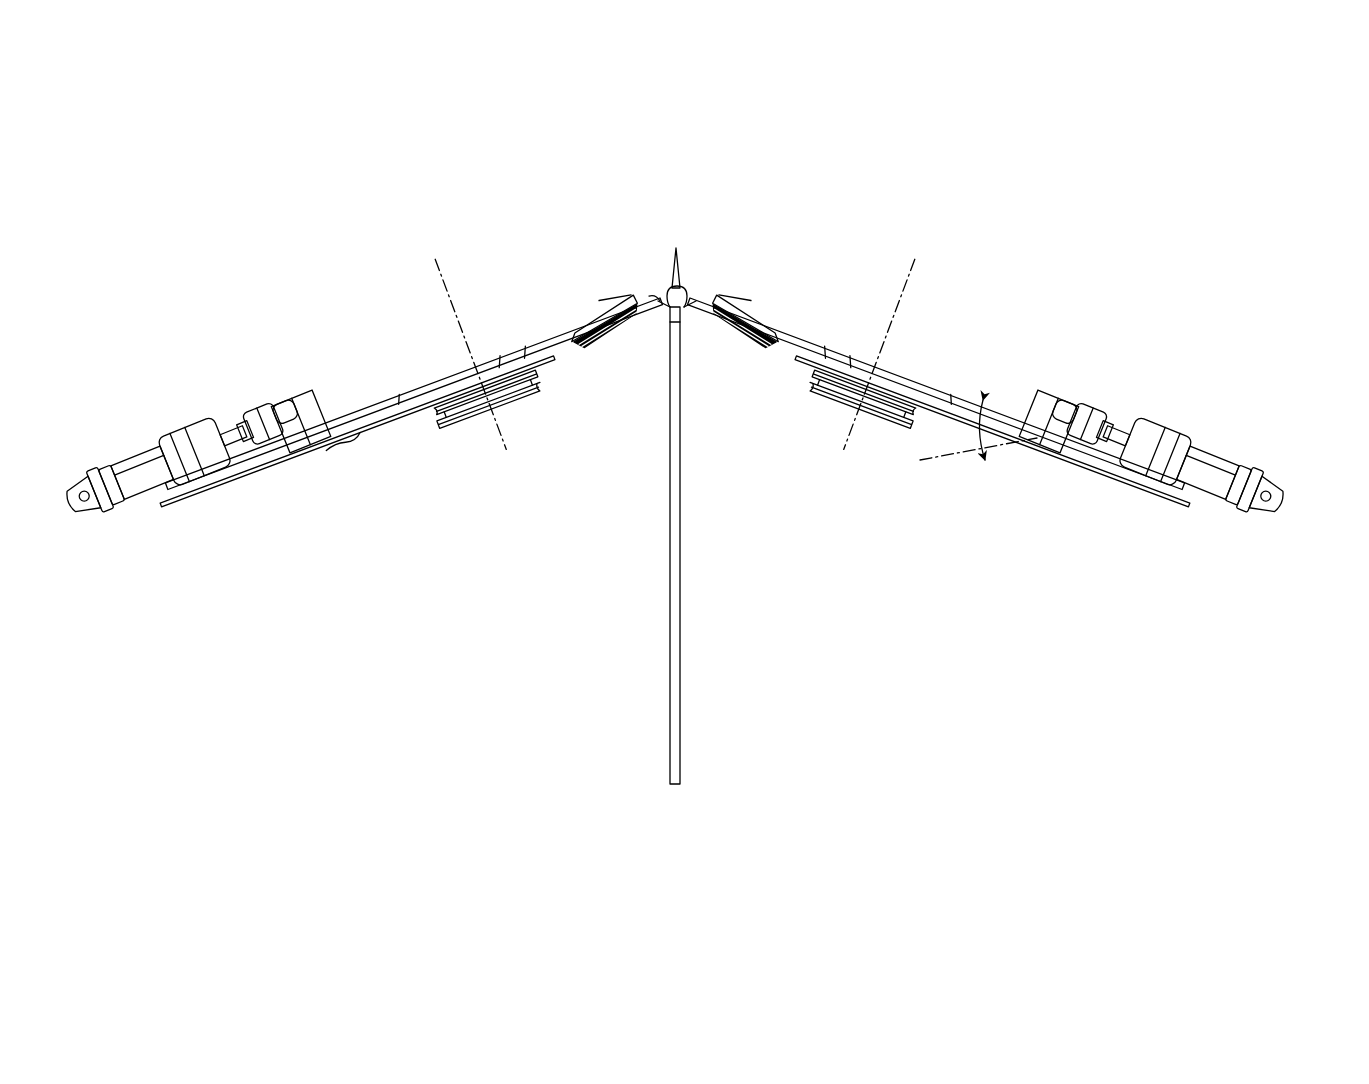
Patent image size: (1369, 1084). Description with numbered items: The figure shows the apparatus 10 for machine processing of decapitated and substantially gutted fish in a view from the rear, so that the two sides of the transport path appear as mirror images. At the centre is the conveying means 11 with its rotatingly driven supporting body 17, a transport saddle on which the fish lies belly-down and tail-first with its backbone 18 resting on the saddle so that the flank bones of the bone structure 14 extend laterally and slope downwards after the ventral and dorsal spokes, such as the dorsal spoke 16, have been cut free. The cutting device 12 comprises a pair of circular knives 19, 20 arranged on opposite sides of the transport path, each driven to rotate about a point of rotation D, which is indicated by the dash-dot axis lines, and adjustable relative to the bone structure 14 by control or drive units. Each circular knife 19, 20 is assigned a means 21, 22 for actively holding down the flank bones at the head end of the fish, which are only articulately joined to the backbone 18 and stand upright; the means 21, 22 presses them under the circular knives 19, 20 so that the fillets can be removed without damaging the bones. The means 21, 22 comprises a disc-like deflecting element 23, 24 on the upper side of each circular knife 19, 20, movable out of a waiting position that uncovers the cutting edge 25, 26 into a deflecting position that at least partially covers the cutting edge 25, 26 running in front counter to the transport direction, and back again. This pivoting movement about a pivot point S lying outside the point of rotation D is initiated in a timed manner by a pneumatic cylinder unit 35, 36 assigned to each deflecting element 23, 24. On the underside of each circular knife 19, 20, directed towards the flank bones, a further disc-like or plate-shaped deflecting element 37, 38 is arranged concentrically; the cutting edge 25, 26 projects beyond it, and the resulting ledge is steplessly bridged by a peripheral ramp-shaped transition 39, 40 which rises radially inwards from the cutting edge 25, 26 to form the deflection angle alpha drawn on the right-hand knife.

The apparatus 10 is at (1200, 282).
The conveying means 11 is at (588, 716).
The cutting device 12 is at (1182, 403).
The bone structure 14 is at (700, 271).
The dorsal spoke 16 is at (672, 261).
The supporting body 17 is at (676, 594).
The backbone 18 is at (656, 290).
The circular knife 19 is at (967, 404).
The circular knife 20 is at (440, 407).
The means for holding down flank bones 21 is at (956, 376).
The means for holding down flank bones 22 is at (449, 359).
The deflecting element 23 is at (816, 338).
The deflecting element 24 is at (494, 349).
The cutting edge 25 is at (702, 292).
The cutting edge 26 is at (641, 288).
The pneumatic cylinder unit 35 is at (1260, 434).
The pneumatic cylinder unit 36 is at (168, 404).
The deflecting element 37 is at (808, 347).
The deflecting element 38 is at (352, 436).
The ramp-shaped transition 39 is at (1028, 442).
The ramp-shaped transition 40 is at (322, 438).